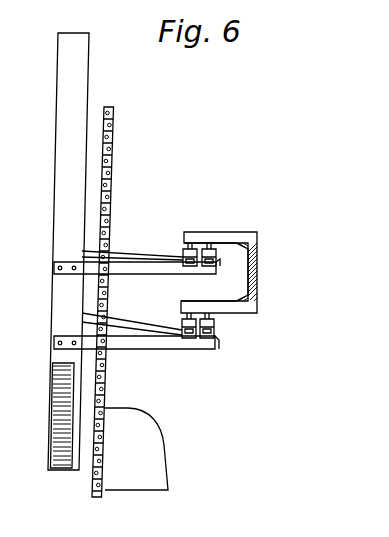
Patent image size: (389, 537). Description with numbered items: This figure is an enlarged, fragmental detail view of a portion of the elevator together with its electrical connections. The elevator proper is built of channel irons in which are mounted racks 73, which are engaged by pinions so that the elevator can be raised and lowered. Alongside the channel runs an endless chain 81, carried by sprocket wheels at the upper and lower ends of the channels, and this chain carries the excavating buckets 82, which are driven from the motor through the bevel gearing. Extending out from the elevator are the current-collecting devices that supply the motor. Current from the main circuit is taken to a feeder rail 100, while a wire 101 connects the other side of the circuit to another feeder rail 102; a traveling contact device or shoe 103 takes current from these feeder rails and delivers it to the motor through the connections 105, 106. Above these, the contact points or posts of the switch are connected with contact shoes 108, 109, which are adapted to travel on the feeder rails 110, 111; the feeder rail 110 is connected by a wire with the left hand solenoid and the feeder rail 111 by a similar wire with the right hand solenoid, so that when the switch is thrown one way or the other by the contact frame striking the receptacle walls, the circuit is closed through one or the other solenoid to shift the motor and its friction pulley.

The rack 73 is at (52, 412).
The endless chain 81 is at (110, 166).
The excavating bucket 82 is at (137, 449).
The feeder rail 100 is at (186, 318).
The wire 101 is at (214, 345).
The feeder rail 102 is at (210, 320).
The traveling contact shoe 103 is at (184, 340).
The connection 105 is at (135, 323).
The connection 106 is at (150, 331).
The contact shoe 108 is at (192, 271).
The contact shoe 109 is at (216, 258).
The feeder rail 110 is at (189, 248).
The feeder rail 111 is at (211, 248).